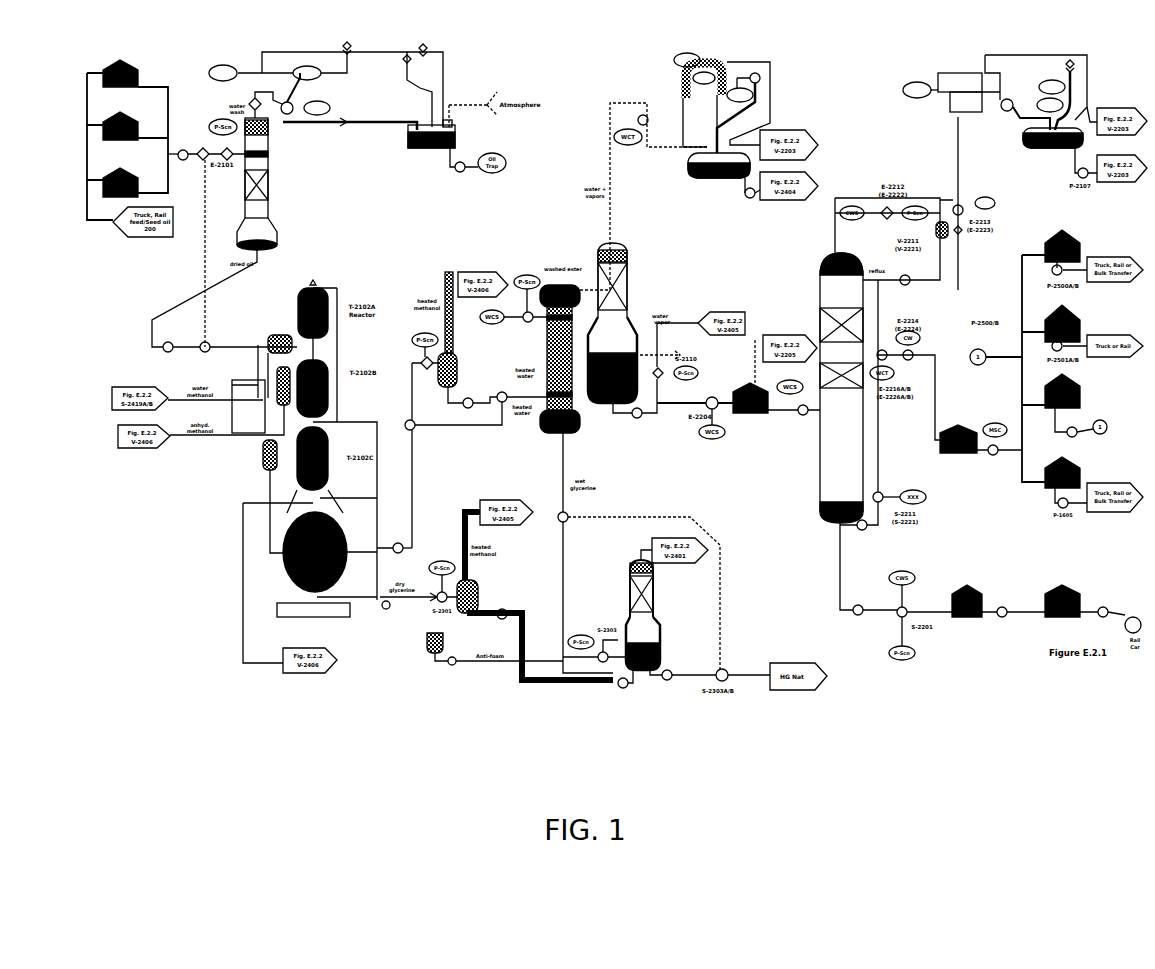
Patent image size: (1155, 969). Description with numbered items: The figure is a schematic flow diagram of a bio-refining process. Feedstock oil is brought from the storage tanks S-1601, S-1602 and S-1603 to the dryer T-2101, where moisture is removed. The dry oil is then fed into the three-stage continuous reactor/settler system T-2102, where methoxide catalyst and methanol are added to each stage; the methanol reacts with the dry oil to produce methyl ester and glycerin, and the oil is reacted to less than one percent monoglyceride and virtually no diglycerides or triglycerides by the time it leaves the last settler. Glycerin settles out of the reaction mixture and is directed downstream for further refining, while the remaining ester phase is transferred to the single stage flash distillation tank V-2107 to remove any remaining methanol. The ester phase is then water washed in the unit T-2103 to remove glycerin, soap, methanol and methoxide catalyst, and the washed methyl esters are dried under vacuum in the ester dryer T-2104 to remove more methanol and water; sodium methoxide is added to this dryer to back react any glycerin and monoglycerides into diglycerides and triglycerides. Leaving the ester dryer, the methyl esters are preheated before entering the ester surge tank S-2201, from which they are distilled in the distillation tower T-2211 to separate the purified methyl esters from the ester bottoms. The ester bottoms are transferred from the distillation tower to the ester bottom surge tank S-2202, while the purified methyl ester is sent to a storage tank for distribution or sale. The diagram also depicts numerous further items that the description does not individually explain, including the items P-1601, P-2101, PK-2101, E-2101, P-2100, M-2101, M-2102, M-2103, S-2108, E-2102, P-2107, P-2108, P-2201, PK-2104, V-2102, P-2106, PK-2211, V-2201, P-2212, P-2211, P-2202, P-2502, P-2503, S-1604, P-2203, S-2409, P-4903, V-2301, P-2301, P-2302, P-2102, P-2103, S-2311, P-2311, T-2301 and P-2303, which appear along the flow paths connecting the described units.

The palm oil storage tank S-1601 is at (120, 60).
The storage tank S-1602 is at (122, 117).
The swing tank S-1603 is at (122, 172).
The oil feed pump P-1601 is at (187, 161).
The dryer T-2101 is at (275, 184).
The dried oil pump P-2101 is at (168, 342).
The oil drying vacuum system PK-2101 is at (326, 77).
The oil drying hotwell E-2101 is at (429, 151).
The hotwell pump P-2100 is at (461, 172).
The three-stage continuous reactor/settler system T-2102 is at (313, 419).
The mixer M-2101 is at (279, 339).
The mixer M-2102 is at (266, 391).
The mixer M-2103 is at (257, 455).
The single stage flash distillation tank V-2107 is at (476, 329).
The strainer S-2108 is at (527, 323).
The heat exchanger E-2102 is at (409, 363).
The flash tank pump P-2107 is at (459, 407).
The water wash T-2103 is at (560, 323).
The ester dryer T-2104 is at (640, 323).
The ester dryer pump P-2108 is at (621, 417).
The ester surge tank S-2201 is at (745, 376).
The surge tank pump P-2201 is at (799, 415).
The ester drying vacuum system PK-2104 is at (744, 87).
The ester drying hotwell V-2102 is at (719, 179).
The hotwell pump P-2106 is at (748, 198).
The batch still vacuum system PK-2211 is at (1008, 78).
The ester distillation hotwell V-2201 is at (1048, 154).
The reflux pump P-2212 is at (905, 290).
The distillation tower T-2211 is at (794, 384).
The still bottoms pump P-2211 is at (870, 541).
The bottoms pump P-2202 is at (860, 617).
The assay tank pump P-2502 is at (990, 456).
The surge tank pump P-2503 is at (1066, 437).
The swing tank S-1604 is at (1079, 472).
The ester bottom surge tank S-2202 is at (967, 587).
The bottoms surge pump P-2203 is at (1002, 618).
The ester bottoms storage tank S-2409 is at (1068, 588).
The storage tank pump P-4903 is at (1098, 618).
The dry glycerine flash tank V-2301 is at (494, 593).
The glycerine pump P-2301 is at (500, 623).
The glycerine column feed pump P-2302 is at (620, 689).
The pump P-2102 is at (402, 553).
The pump P-2103 is at (390, 610).
The anti-foam tank S-2311 is at (416, 643).
The anti-foam pump P-2311 is at (455, 666).
The glycerine column T-2301 is at (668, 615).
The glycerine column bottoms pump P-2303 is at (670, 683).